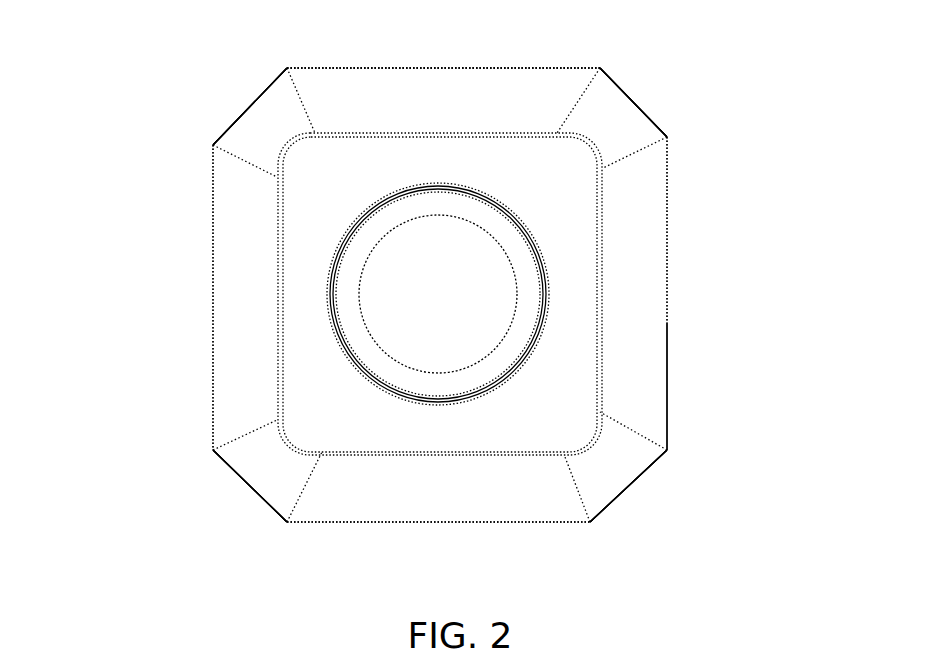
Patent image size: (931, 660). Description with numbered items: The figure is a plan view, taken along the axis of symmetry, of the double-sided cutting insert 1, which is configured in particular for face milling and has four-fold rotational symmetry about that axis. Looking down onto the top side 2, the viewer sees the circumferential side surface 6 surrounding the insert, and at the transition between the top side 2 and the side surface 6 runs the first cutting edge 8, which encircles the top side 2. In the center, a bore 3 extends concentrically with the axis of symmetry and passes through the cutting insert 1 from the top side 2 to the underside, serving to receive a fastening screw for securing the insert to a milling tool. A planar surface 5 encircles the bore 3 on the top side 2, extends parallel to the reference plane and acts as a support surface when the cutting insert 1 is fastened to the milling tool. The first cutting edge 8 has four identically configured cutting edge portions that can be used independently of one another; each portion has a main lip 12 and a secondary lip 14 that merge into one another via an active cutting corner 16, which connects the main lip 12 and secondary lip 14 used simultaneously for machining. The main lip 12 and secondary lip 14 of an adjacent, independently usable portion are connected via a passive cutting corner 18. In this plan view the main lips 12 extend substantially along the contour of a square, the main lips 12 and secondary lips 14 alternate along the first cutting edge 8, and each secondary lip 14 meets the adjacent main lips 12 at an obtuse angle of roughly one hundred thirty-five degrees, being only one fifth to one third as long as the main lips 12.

The cutting insert 1 is at (133, 71).
The top side 2 is at (580, 210).
The bore 3 is at (475, 288).
The planar surface 5 is at (300, 225).
The side surface 6 is at (678, 357).
The first cutting edge 8 is at (522, 68).
The main lip 12 is at (430, 68).
The secondary lip 14 is at (235, 110).
The active cutting corner 16 is at (210, 143).
The passive cutting corner 18 is at (287, 68).